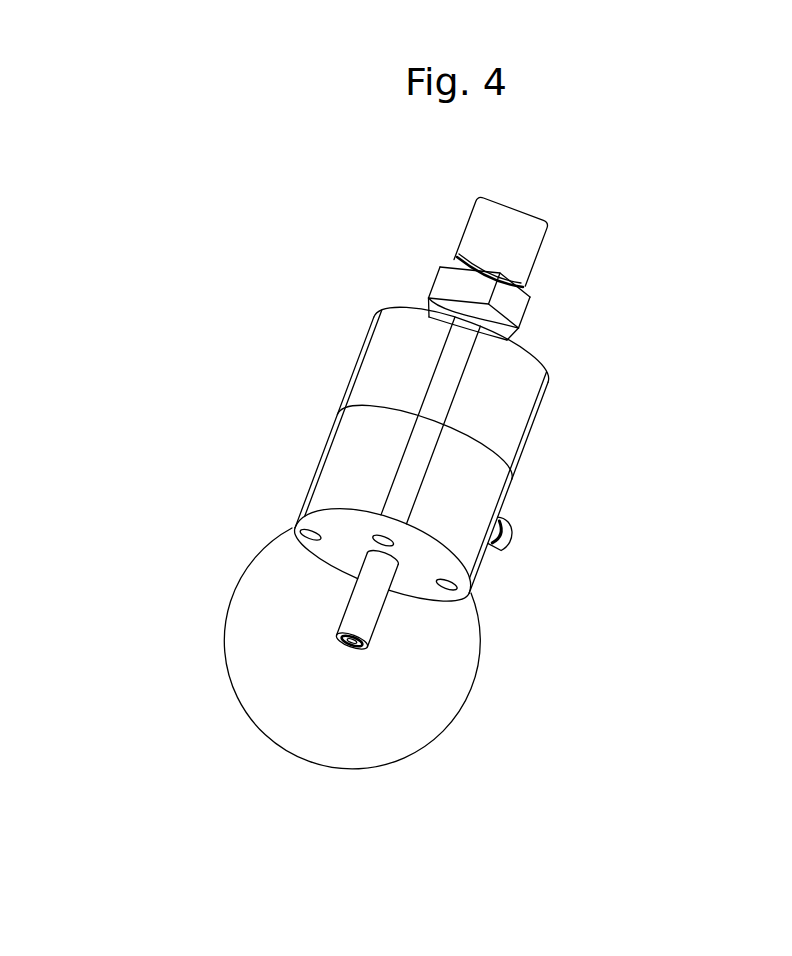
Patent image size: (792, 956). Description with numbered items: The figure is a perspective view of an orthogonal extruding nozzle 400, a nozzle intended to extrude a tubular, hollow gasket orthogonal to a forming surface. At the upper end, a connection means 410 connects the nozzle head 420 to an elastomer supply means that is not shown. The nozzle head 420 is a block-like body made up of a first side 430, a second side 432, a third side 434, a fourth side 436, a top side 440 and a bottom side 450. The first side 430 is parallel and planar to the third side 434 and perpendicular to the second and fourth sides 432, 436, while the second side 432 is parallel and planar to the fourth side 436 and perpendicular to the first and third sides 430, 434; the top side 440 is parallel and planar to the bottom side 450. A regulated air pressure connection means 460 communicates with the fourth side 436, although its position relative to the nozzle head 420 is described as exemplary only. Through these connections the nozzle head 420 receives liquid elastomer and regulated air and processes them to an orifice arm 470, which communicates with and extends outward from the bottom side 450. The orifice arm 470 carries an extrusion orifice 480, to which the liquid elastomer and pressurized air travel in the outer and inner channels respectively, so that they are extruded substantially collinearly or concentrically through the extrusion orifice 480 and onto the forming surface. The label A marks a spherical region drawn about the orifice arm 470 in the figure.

The orthogonal extruding nozzle 400 is at (432, 485).
The connection means 410 is at (436, 280).
The nozzle head 420 is at (545, 380).
The first side 430 is at (498, 410).
The second side 432 is at (390, 385).
The third side 434 is at (332, 390).
The fourth side 436 is at (532, 445).
The top side 440 is at (518, 358).
The bottom side 450 is at (418, 572).
The regulated air pressure connection means 460 is at (500, 543).
The orifice arm 470 is at (338, 612).
The extrusion orifice 480 is at (330, 632).
The spray sphere A is at (237, 587).